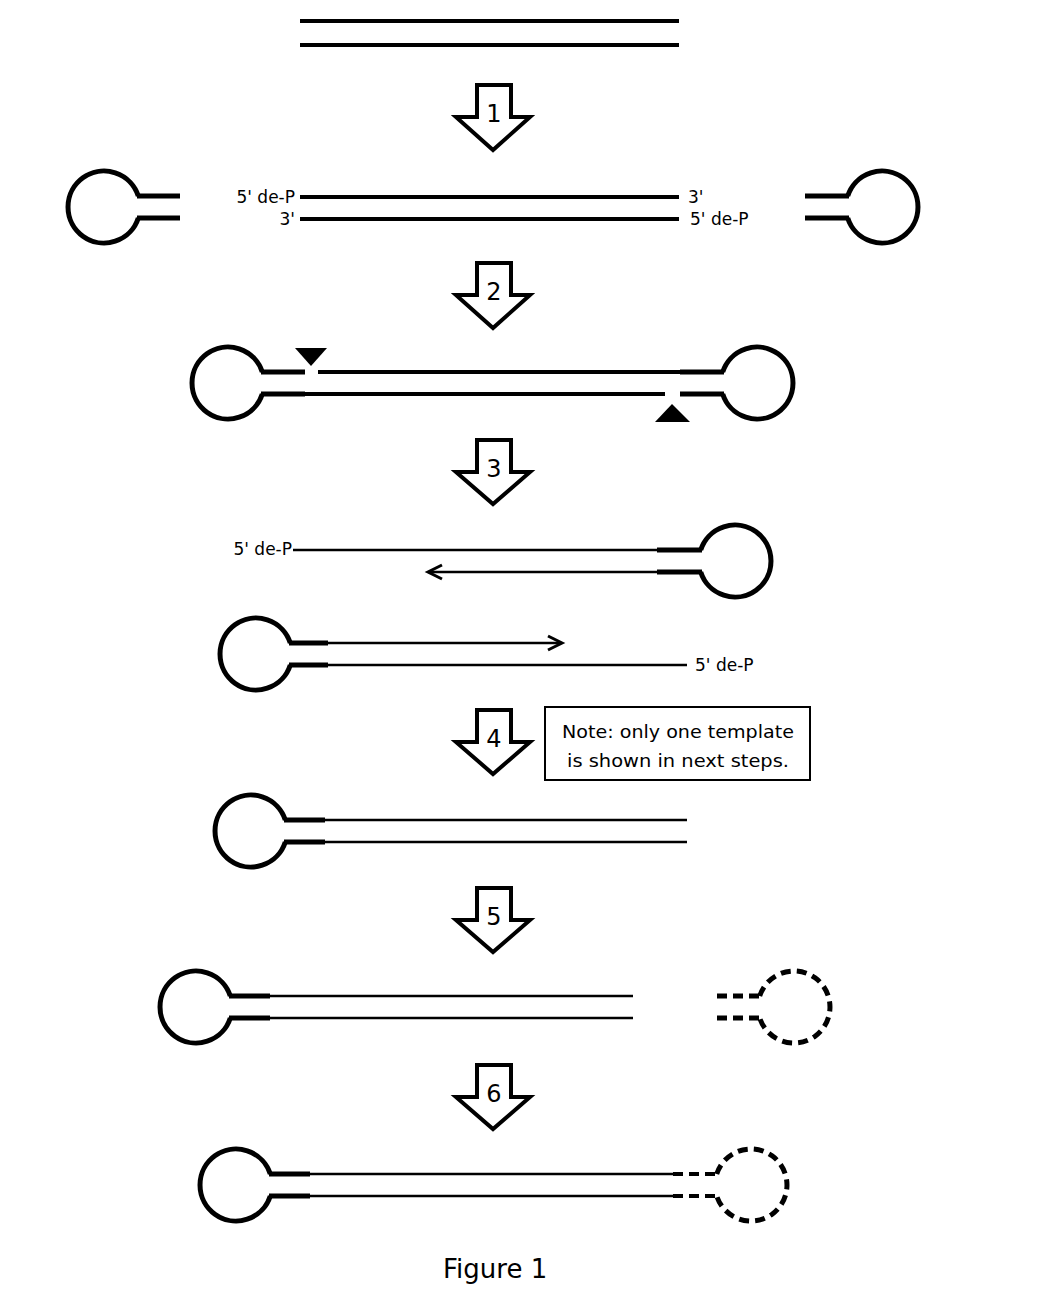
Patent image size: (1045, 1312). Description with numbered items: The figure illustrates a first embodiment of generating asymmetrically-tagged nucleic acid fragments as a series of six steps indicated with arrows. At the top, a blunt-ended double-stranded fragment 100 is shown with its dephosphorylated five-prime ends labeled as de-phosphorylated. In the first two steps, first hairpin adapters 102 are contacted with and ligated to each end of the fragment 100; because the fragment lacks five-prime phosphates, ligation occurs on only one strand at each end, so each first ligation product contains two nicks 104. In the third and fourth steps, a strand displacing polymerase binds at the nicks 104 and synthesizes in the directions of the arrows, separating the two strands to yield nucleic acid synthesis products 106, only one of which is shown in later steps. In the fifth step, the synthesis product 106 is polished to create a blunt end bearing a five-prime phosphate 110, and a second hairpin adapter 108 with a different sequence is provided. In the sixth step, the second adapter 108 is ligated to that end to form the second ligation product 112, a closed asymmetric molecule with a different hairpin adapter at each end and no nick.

The double-stranded fragment 100 is at (228, 4).
The first hairpin adapter 102 is at (86, 168).
The nick 104 is at (490, 387).
The nucleic acid synthesis product 106 is at (196, 793).
The second hairpin adapter 108 is at (822, 970).
The 5' phosphate 110 is at (663, 1034).
The second ligation product 112 is at (189, 1139).